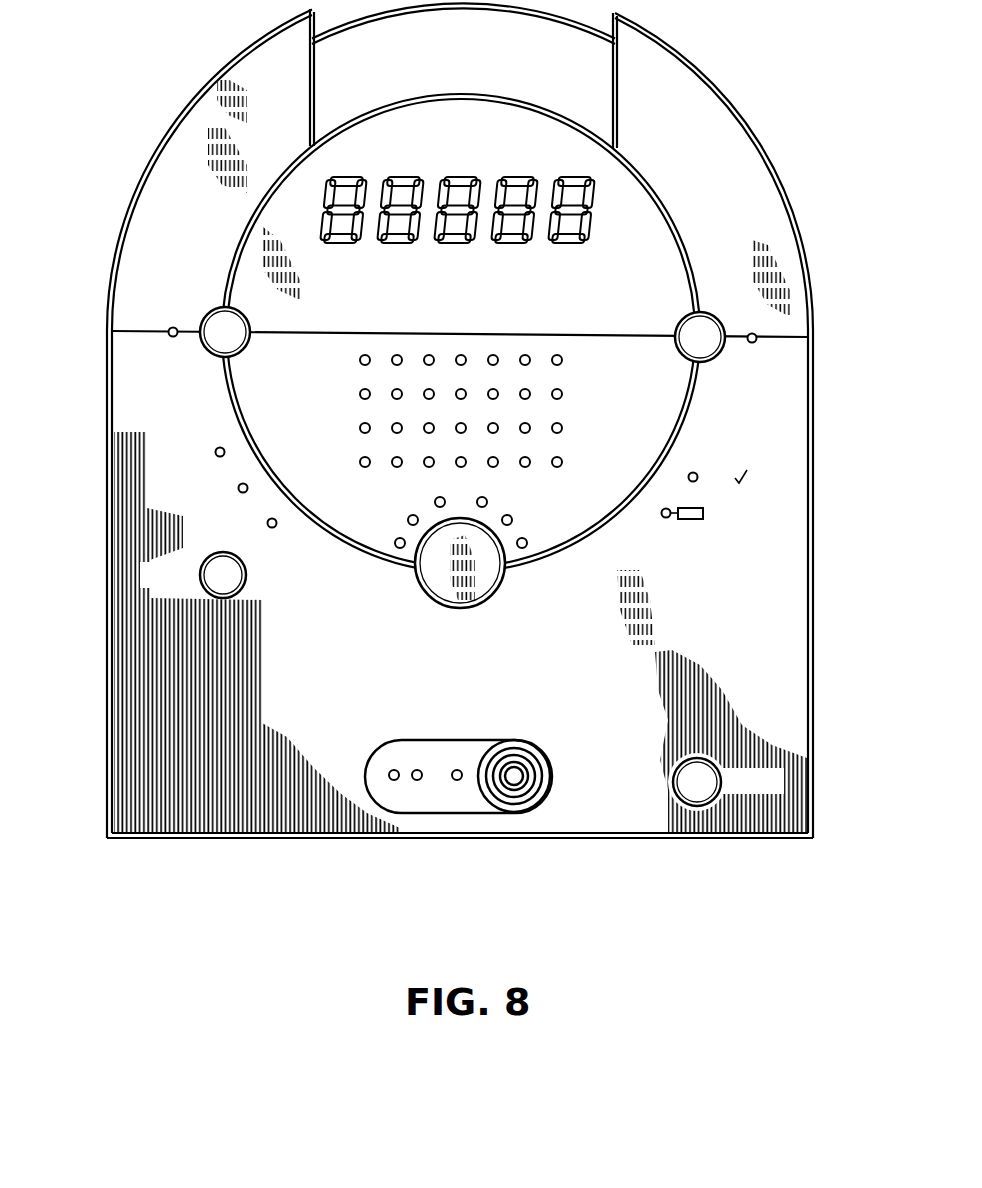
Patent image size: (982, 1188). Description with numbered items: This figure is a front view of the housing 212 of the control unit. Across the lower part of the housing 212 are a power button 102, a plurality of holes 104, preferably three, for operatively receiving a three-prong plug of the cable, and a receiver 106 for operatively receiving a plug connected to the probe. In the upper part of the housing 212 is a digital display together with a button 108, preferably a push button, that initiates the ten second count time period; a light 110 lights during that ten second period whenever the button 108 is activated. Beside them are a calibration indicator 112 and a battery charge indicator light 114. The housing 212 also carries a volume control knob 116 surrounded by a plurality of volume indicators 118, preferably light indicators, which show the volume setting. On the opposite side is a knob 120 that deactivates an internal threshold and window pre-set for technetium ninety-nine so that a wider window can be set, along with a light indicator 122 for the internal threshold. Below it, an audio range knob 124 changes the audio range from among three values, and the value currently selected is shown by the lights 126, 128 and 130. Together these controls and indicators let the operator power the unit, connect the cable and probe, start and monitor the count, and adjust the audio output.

The housing 212 is at (178, 101).
The knob 120 is at (203, 318).
The light indicator 122 is at (168, 331).
The light 126 is at (220, 447).
The light 128 is at (242, 483).
The light 130 is at (270, 518).
The audio range knob 124 is at (221, 583).
The button 108 is at (710, 330).
The light 110 is at (756, 334).
The calibration indicator 112 is at (697, 472).
The battery charge indicator light 114 is at (703, 514).
The volume indicators 118 is at (528, 541).
The volume control knob 116 is at (487, 568).
The holes 104 is at (457, 781).
The receiver 106 is at (514, 783).
The power button 102 is at (698, 785).